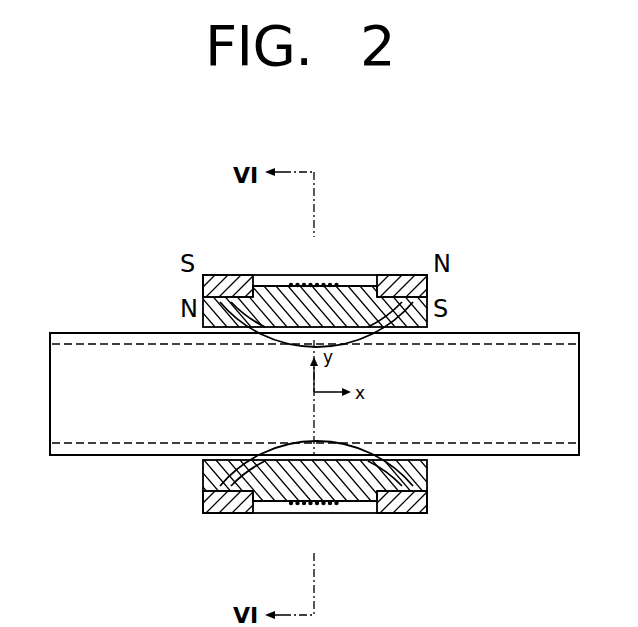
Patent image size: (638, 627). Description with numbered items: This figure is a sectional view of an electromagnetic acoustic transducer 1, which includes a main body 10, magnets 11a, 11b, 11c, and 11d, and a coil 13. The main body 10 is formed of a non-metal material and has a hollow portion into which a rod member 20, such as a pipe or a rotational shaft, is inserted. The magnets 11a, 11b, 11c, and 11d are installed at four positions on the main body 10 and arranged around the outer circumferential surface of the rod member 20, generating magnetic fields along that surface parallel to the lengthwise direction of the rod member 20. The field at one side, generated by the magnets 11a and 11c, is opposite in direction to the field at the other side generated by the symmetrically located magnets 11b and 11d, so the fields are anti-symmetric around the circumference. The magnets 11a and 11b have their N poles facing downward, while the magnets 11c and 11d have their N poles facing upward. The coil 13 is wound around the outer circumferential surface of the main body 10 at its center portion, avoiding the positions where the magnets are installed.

The electromagnetic acoustic transducer 1 is at (311, 517).
The main body 10 is at (352, 489).
The magnet 11a is at (228, 274).
The magnet 11b is at (242, 514).
The magnet 11c is at (408, 274).
The magnet 11d is at (407, 514).
The coil 13 is at (293, 283).
The rod member 20 is at (535, 333).